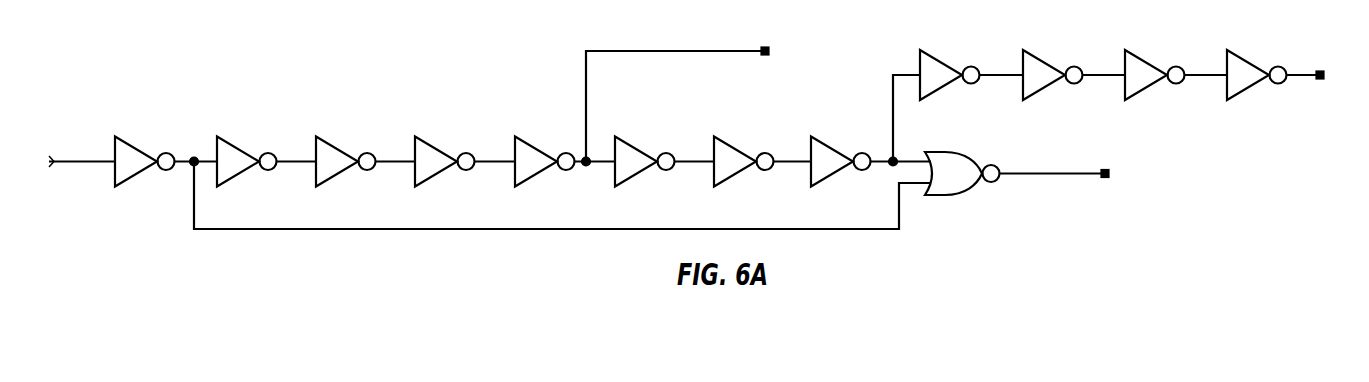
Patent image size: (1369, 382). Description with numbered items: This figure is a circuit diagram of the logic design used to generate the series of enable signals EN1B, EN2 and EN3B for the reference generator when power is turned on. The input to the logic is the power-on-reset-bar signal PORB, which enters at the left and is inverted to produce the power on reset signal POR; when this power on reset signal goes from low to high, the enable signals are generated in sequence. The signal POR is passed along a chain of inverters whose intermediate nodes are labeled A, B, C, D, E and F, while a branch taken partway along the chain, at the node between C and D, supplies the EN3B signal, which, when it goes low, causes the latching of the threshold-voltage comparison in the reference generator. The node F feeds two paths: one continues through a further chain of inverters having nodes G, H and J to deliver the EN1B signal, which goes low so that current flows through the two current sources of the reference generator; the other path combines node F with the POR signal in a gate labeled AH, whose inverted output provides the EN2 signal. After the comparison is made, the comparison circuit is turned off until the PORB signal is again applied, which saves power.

The PORB signal PORB is at (133, 158).
The power on reset signal POR is at (560, 194).
The inverter output node A is at (266, 160).
The inverter output node B is at (365, 160).
The inverter output node C is at (465, 160).
The inverter output node D is at (664, 160).
The inverter output node E is at (762, 160).
The inverter output node F is at (871, 131).
The inverter output node G is at (971, 74).
The inverter output node H is at (1074, 74).
The inverter output node J is at (1176, 74).
The EN3B signal EN3B is at (642, 102).
The EN2 signal EN2 is at (1054, 159).
The EN1B signal EN1B is at (1287, 70).
The NOR gate AH is at (962, 173).